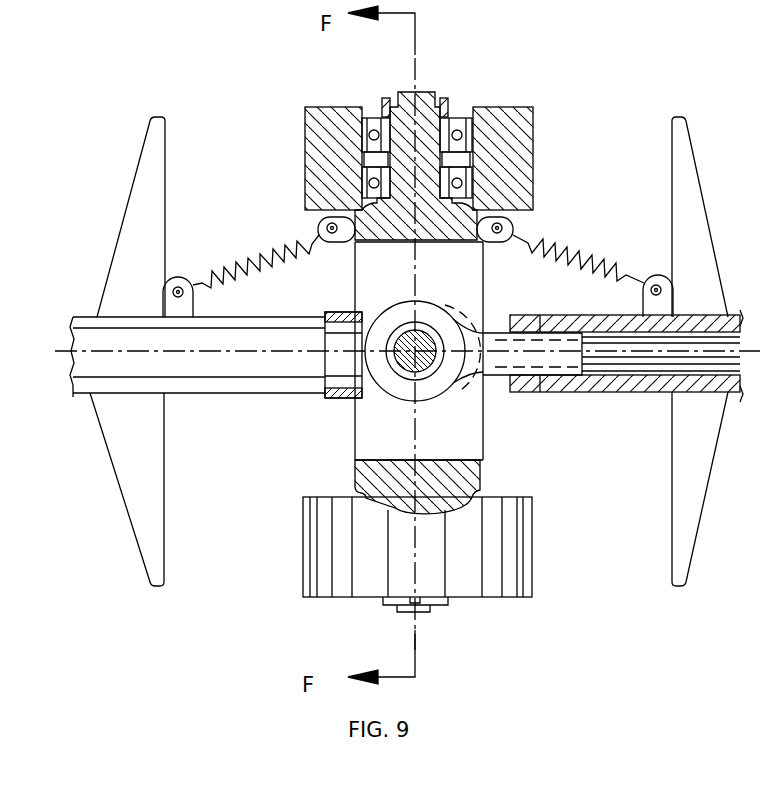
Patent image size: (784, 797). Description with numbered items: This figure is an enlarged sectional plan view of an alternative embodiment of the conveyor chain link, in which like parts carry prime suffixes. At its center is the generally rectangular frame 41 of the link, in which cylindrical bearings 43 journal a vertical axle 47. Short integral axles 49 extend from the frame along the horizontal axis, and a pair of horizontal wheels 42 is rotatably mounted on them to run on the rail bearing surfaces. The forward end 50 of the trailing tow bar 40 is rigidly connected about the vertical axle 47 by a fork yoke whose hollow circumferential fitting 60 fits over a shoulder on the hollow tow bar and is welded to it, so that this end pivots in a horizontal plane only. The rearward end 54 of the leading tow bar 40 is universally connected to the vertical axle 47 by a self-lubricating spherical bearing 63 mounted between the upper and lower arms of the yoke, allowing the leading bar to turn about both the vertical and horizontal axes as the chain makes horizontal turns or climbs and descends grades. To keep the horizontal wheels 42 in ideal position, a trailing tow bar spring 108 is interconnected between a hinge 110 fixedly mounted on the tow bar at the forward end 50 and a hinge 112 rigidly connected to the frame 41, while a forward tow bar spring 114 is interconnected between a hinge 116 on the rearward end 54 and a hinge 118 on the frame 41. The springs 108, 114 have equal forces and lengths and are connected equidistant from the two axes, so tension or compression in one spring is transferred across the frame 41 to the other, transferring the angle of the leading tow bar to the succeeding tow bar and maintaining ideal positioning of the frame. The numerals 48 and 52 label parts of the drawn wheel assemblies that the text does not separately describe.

The tow bar 40 is at (411, 357).
The frame 41 is at (484, 475).
The horizontal wheels 42 is at (511, 107).
The cylindrical bearings 43 is at (416, 622).
The vertical axle 47 is at (425, 335).
The left blade 48 is at (140, 193).
The integral axle 49 is at (380, 106).
The forward end 50 is at (255, 394).
The right blade 52 is at (683, 157).
The rearward end 54 is at (572, 393).
The circumferential fitting 60 is at (340, 399).
The spherical bearing 63 is at (462, 388).
The trailing tow bar spring 108 is at (236, 257).
The hinge 110 is at (179, 279).
The hinge 112 is at (333, 245).
The forward tow bar spring 114 is at (577, 245).
The hinge 116 is at (651, 280).
The hinge 118 is at (496, 245).